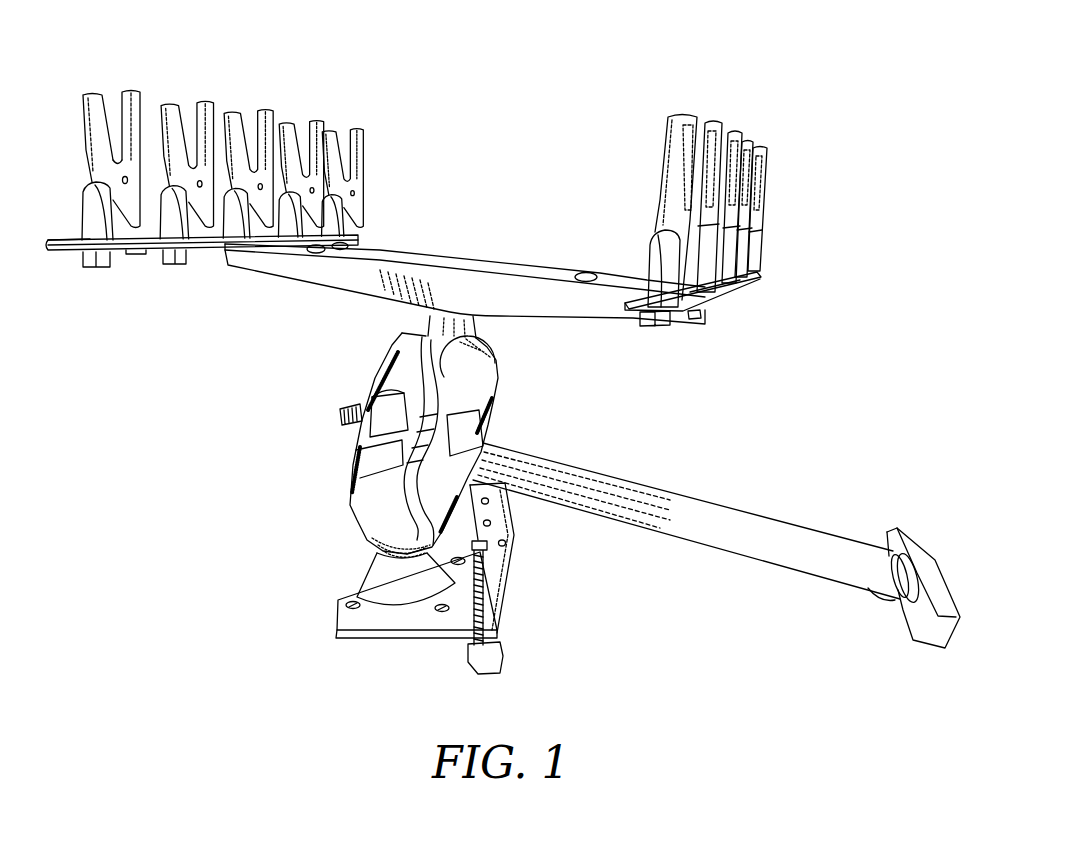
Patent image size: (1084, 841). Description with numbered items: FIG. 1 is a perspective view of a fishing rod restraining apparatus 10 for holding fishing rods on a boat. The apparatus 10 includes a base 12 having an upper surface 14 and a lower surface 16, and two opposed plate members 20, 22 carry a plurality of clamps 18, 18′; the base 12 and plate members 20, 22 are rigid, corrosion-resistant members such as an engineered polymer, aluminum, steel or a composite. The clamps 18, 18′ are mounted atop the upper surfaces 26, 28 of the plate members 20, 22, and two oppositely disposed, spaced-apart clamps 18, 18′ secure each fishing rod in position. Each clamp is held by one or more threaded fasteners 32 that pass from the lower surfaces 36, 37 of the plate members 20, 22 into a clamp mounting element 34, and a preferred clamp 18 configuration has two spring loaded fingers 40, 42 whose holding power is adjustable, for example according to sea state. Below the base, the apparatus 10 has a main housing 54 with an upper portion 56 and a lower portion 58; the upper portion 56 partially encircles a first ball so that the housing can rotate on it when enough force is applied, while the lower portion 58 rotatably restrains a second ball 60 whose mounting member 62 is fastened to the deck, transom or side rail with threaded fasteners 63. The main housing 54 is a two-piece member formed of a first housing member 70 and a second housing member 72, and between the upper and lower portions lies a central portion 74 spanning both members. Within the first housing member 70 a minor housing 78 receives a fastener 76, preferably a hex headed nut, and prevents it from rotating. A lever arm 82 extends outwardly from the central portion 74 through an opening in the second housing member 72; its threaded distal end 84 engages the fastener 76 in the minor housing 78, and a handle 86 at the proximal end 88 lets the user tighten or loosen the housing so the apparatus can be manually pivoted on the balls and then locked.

The fishing rod restraining apparatus 10 is at (892, 93).
The base 12 is at (465, 285).
The upper surface 14 is at (437, 260).
The lower surface 16 is at (322, 293).
The clamp 18 is at (204, 125).
The clamp 18′ is at (672, 132).
The plate member 20 is at (201, 248).
The plate member 22 is at (720, 300).
The upper surface 26 is at (70, 240).
The upper surface 28 is at (715, 291).
The threaded fastener 32 is at (99, 268).
The clamp mounting element 34 is at (88, 195).
The lower surface 36 is at (136, 255).
The lower surface 37 is at (694, 319).
The spring loaded finger 40 is at (88, 100).
The spring loaded finger 42 is at (136, 94).
The main housing 54 is at (393, 460).
The upper portion 56 is at (492, 370).
The lower portion 58 is at (351, 443).
The second ball 60 is at (380, 533).
The mounting member 62 is at (396, 620).
The threaded fastener 63 is at (499, 658).
The first housing member 70 is at (383, 378).
The second housing member 72 is at (501, 446).
The central portion 74 is at (468, 462).
The fastener 76 is at (372, 400).
The minor housing 78 is at (378, 430).
The lever arm 82 is at (766, 526).
The threaded distal end 84 is at (340, 415).
The handle 86 is at (940, 572).
The proximal end 88 is at (872, 590).